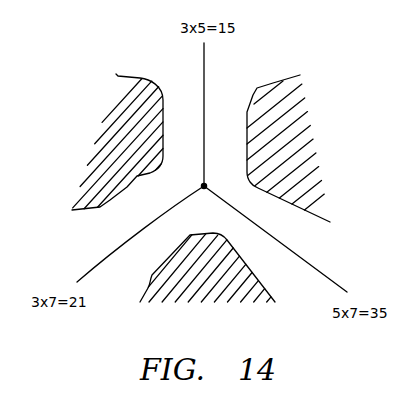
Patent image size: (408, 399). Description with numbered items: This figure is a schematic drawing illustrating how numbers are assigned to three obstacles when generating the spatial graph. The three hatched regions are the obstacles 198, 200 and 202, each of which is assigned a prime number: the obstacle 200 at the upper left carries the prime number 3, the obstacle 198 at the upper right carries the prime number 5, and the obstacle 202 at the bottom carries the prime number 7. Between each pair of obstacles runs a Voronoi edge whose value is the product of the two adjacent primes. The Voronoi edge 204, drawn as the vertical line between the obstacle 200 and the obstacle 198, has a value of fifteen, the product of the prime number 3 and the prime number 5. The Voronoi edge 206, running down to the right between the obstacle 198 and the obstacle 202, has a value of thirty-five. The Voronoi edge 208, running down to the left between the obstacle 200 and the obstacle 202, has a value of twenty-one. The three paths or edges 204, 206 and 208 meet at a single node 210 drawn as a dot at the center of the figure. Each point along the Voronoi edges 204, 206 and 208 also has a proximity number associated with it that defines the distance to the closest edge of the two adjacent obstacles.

The obstacle 198 is at (307, 148).
The obstacle 200 is at (116, 142).
The obstacle 202 is at (207, 287).
The Voronoi edge 204 is at (205, 88).
The Voronoi edge 206 is at (290, 251).
The Voronoi edge 208 is at (137, 228).
The node 210 is at (204, 189).
The prime number 3 is at (116, 97).
The prime number 5 is at (338, 172).
The prime number 7 is at (172, 303).